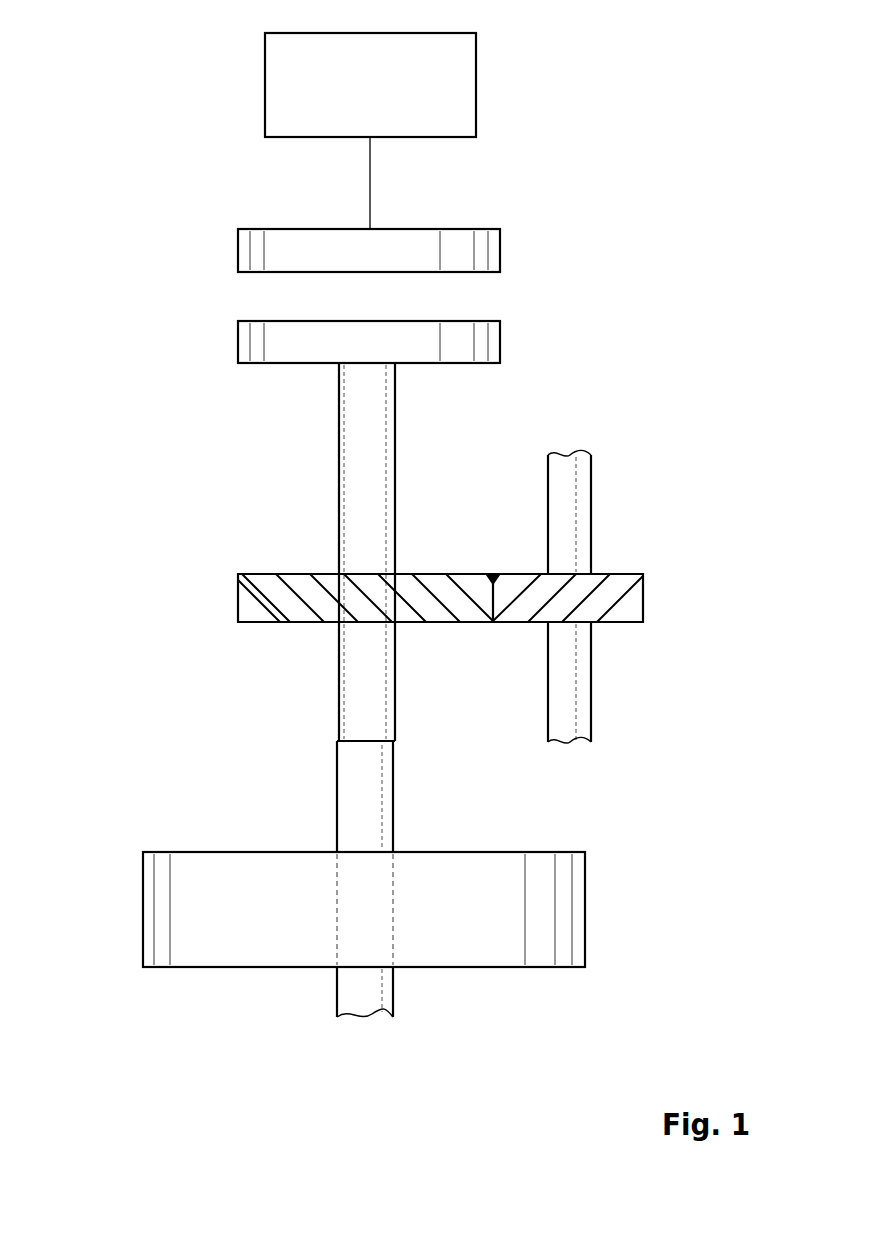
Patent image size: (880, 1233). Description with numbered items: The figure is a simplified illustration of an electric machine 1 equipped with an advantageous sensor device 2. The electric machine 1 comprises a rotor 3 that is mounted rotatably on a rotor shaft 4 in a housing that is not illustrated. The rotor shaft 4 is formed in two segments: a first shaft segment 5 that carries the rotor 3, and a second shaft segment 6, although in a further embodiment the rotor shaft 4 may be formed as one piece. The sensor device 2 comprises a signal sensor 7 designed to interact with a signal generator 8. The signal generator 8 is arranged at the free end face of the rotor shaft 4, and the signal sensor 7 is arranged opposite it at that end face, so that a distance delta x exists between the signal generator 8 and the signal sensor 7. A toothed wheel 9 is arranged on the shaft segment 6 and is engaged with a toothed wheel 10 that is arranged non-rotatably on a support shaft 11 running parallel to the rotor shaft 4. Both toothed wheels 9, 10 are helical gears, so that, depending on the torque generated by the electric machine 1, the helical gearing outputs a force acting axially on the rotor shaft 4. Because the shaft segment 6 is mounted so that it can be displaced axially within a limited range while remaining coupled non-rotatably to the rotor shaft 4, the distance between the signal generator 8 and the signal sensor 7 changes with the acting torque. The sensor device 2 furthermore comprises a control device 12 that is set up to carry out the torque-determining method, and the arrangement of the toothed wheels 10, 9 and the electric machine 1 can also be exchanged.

The electric machine 1 is at (632, 102).
The sensor device 2 is at (128, 297).
The rotor 3 is at (143, 909).
The rotor shaft 4 is at (352, 803).
The first shaft segment 5 is at (352, 997).
The second shaft segment 6 is at (355, 467).
The signal sensor 7 is at (238, 250).
The signal generator 8 is at (238, 343).
The toothed wheel 9 is at (238, 598).
The toothed wheel 10 is at (643, 598).
The support shaft 11 is at (570, 518).
The control device 12 is at (384, 99).